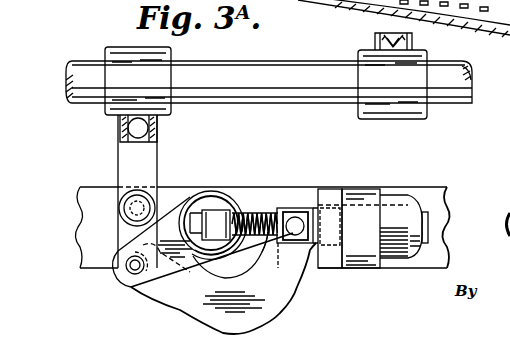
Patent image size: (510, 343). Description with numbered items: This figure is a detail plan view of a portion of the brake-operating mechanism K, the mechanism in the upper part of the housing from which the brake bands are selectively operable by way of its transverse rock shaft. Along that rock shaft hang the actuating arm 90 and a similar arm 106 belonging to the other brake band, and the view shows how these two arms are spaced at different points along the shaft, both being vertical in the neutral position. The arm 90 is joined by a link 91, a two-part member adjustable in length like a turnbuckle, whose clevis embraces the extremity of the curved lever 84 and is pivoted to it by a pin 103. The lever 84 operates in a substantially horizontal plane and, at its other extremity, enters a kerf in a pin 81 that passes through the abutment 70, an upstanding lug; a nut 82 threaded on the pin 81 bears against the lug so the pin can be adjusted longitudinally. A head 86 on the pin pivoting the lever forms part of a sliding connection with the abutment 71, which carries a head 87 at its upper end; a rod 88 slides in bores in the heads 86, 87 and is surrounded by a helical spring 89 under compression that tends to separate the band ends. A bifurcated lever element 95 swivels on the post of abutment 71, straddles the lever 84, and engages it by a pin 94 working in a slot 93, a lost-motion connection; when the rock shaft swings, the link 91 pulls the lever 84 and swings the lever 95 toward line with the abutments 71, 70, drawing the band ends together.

The brake-operating mechanism K is at (268, 70).
The arm 106 is at (374, 42).
The actuating arm 90 is at (160, 124).
The link 91 is at (114, 160).
The pin 103 is at (132, 202).
The bifurcated lever element 95 is at (153, 234).
The pin 94 is at (130, 262).
The slot 93 is at (203, 249).
The curved lever 84 is at (288, 288).
The rod 88 is at (268, 258).
The head 87 is at (213, 214).
The abutment 71 is at (226, 196).
The helical spring 89 is at (263, 207).
The head 86 is at (292, 208).
The pin 81 is at (328, 213).
The abutment 70 is at (366, 192).
The nut 82 is at (398, 196).